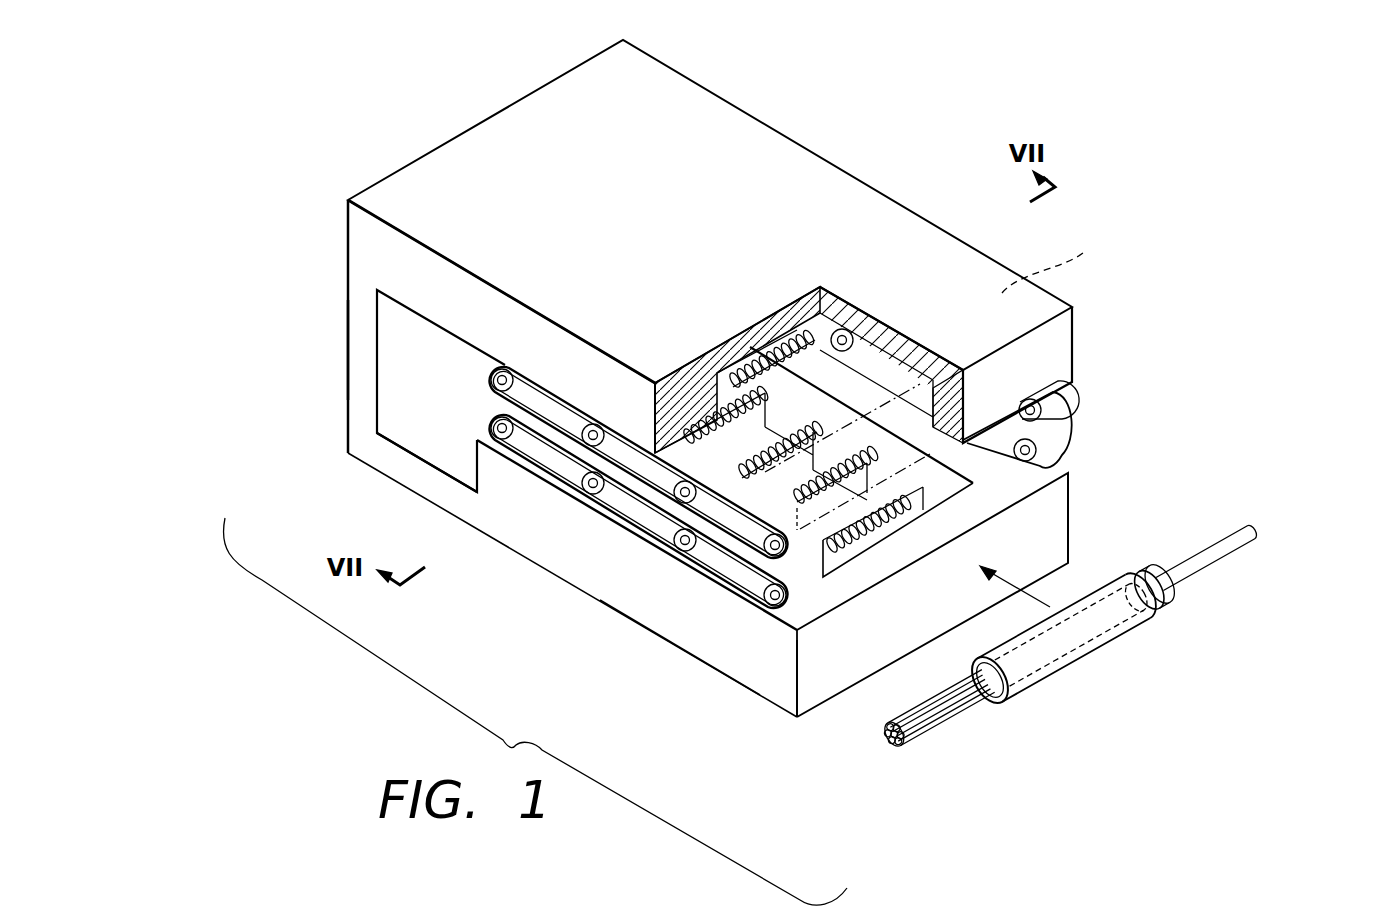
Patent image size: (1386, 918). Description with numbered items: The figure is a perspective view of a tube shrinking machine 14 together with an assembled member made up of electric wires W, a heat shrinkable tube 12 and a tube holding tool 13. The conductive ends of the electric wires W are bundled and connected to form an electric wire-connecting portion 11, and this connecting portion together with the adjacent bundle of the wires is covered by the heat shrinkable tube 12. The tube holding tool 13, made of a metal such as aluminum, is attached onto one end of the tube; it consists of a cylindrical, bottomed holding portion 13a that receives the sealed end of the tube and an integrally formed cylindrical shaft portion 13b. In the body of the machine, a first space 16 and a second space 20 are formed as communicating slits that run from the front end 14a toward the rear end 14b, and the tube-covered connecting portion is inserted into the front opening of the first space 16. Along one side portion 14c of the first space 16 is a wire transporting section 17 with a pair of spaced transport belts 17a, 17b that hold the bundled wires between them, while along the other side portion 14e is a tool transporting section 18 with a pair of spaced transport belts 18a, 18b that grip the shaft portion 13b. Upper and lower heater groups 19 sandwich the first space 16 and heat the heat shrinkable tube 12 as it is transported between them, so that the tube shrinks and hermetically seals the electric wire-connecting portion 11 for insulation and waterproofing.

The electric wire-connecting portion 11 is at (1134, 618).
The heat shrinkable tube 12 is at (1052, 677).
The tube holding tool 13 is at (1204, 614).
The holding portion 13a is at (1170, 607).
The shaft portion 13b is at (1210, 563).
The tube shrinking machine 14 is at (793, 157).
The front end 14a is at (805, 712).
The rear end 14b is at (348, 345).
The one side portion 14c is at (742, 685).
The other side portion 14e is at (1063, 264).
The first space 16 is at (1060, 528).
The wire transporting section 17 is at (638, 536).
The transport belt 17a is at (637, 462).
The transport belt 17b is at (565, 468).
The tool transporting section 18 is at (1018, 398).
The transport belt 18a is at (1068, 402).
The transport belt 18b is at (1165, 378).
The heater groups 19 is at (790, 347).
The second space 20 is at (433, 452).
The electric wires W is at (950, 690).